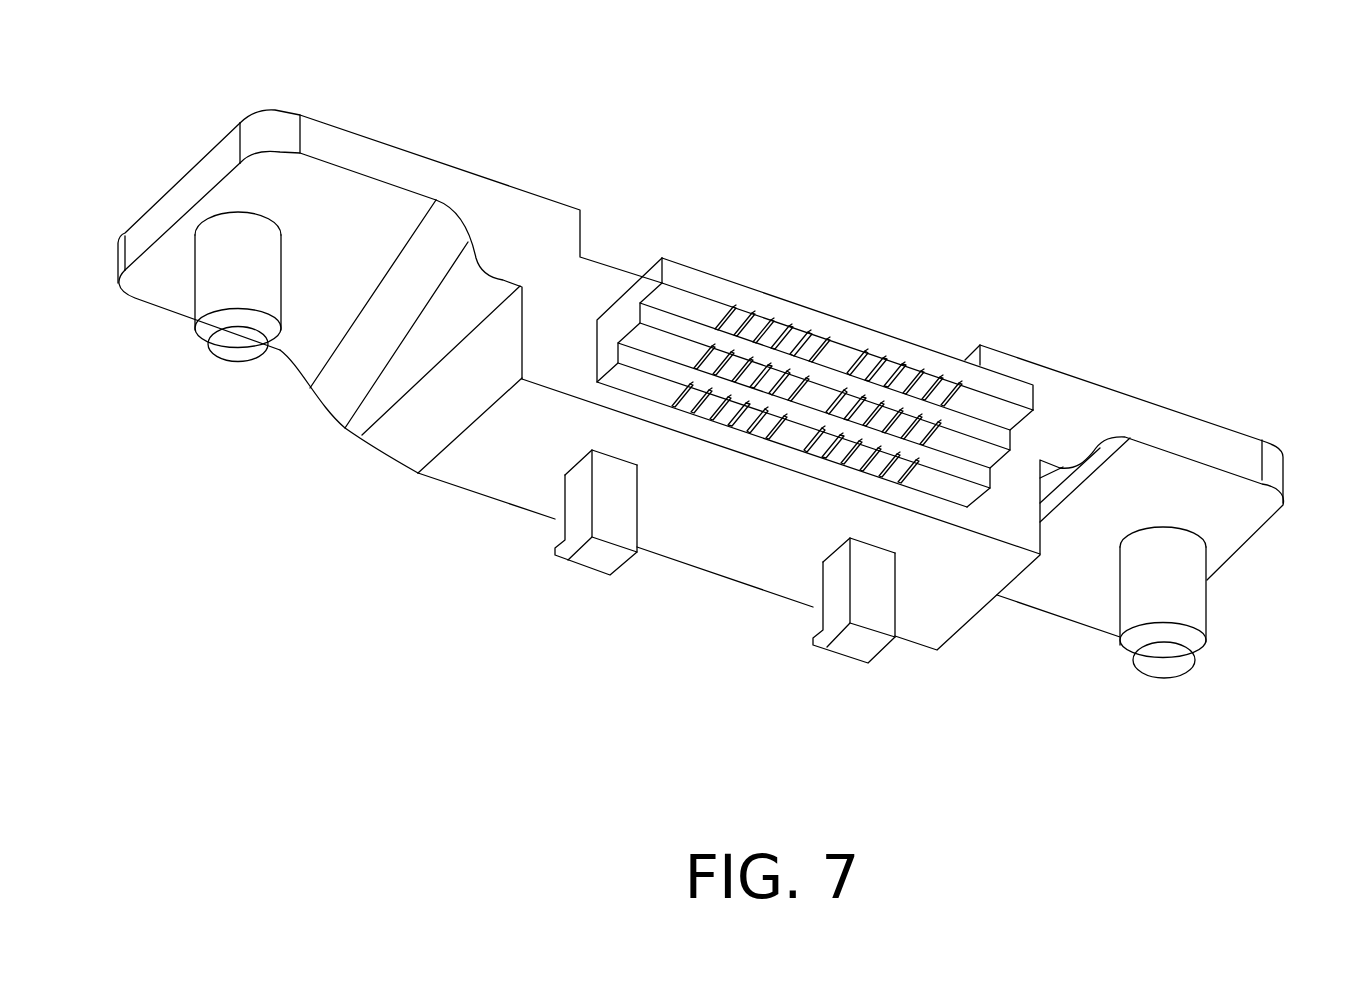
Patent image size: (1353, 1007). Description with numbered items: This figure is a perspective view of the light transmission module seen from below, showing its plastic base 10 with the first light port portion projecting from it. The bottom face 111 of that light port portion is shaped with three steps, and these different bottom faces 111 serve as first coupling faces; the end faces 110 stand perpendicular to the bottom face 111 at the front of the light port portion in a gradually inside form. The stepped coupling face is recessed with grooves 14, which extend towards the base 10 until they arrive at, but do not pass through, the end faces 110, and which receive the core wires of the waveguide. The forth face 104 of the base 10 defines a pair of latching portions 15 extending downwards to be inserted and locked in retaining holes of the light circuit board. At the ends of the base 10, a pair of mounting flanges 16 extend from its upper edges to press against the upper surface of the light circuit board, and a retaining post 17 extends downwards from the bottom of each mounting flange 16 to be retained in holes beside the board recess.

The base 10 is at (492, 467).
The forth face 104 is at (707, 543).
The end faces 110 is at (693, 332).
The bottom face 111 is at (670, 302).
The grooves 14 is at (807, 332).
The latching portions 15 is at (880, 603).
The mounting flanges 16 is at (1192, 440).
The retaining post 17 is at (1187, 595).